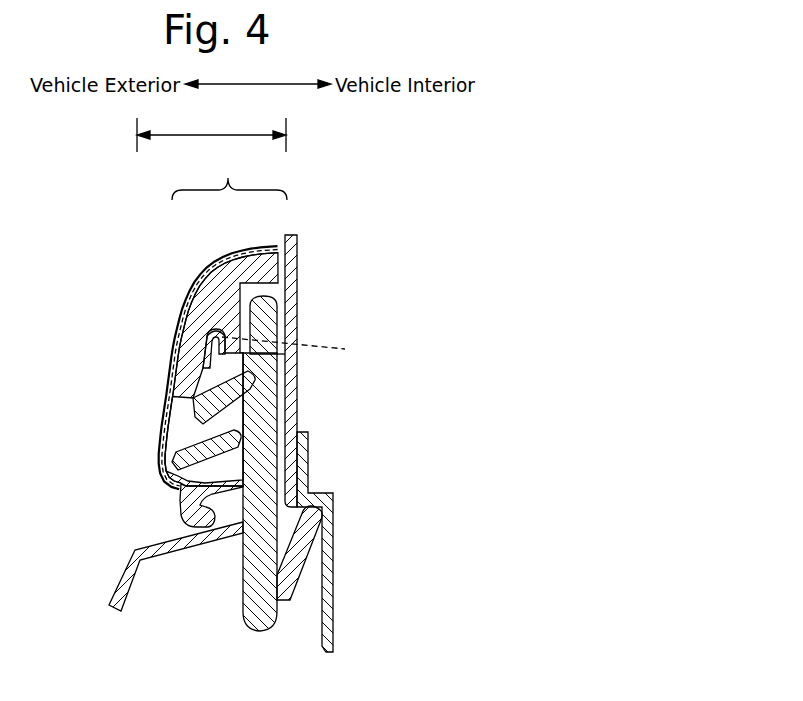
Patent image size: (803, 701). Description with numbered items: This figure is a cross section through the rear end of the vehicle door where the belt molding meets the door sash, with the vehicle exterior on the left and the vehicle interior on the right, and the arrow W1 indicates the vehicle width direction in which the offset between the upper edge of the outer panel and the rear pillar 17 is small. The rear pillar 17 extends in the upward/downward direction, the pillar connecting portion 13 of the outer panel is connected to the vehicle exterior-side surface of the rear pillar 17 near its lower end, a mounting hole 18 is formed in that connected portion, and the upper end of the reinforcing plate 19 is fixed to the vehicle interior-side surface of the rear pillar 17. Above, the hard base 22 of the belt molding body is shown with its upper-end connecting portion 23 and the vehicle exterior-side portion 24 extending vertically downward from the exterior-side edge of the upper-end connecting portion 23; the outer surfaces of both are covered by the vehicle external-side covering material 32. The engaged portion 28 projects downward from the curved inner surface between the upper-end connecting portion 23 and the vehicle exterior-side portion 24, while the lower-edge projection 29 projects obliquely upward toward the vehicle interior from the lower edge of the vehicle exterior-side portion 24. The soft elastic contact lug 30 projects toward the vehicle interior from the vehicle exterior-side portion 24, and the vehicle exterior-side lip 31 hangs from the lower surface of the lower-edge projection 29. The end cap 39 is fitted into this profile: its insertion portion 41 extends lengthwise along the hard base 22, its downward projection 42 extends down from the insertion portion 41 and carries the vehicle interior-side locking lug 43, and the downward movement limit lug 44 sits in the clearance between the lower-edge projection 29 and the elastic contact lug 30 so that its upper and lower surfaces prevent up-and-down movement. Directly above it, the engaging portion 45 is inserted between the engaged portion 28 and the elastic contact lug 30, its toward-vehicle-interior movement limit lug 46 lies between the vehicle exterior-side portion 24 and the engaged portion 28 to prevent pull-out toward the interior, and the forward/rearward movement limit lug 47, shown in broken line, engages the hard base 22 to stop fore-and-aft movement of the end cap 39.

The pillar connecting portion 13 is at (160, 543).
The rear pillar 17 is at (300, 275).
The mounting hole 18 is at (243, 533).
The reinforcing plate 19 is at (335, 501).
The hard base 22 is at (222, 322).
The upper-end connecting portion 23 is at (254, 249).
The vehicle exterior-side portion 24 is at (197, 286).
The engaged portion 28 is at (282, 317).
The lower-edge projection 29 is at (232, 464).
The elastic contact lug 30 is at (214, 388).
The vehicle exterior-side lip 31 is at (195, 522).
The vehicle external-side covering material 32 is at (197, 442).
The end cap 39 is at (298, 596).
The insertion portion 41 is at (271, 413).
The downward projection 42 is at (250, 596).
The vehicle interior-side locking lug 43 is at (303, 549).
The downward movement limit lug 44 is at (170, 455).
The engaging portion 45 is at (204, 364).
The toward-vehicle-interior movement limit lug 46 is at (228, 333).
The forward/rearward movement limit lug 47 is at (297, 351).
The vehicle width direction W1 is at (217, 134).